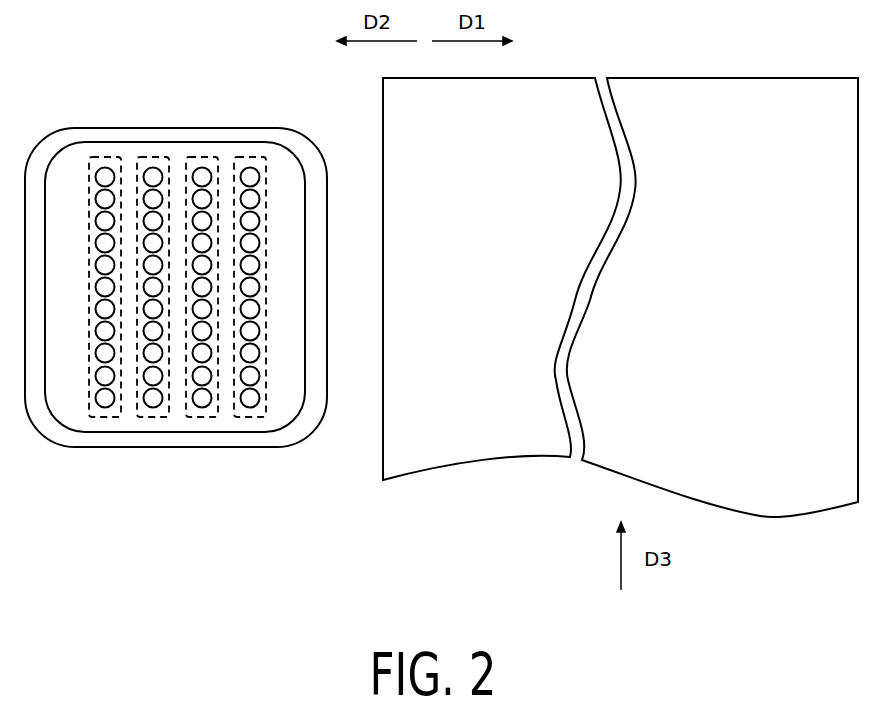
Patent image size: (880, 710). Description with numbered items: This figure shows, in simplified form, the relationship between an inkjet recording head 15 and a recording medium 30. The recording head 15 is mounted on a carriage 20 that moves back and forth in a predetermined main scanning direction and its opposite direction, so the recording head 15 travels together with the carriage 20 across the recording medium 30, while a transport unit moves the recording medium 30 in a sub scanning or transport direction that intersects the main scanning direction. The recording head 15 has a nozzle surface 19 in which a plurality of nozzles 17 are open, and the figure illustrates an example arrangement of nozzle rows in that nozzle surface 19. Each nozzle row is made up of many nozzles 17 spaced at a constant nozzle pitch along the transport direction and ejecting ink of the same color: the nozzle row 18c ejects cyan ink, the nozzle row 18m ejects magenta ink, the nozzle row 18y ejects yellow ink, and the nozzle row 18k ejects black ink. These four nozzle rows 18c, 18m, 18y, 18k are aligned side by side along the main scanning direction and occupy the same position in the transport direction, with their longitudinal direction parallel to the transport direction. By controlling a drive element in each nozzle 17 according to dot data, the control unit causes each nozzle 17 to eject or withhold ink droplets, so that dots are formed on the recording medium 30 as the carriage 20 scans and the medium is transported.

The recording head 15 is at (135, 138).
The nozzle 17 is at (95, 177).
The nozzle row 18c is at (110, 417).
The nozzle row 18m is at (160, 417).
The nozzle row 18y is at (207, 417).
The nozzle row 18k is at (255, 417).
The nozzle surface 19 is at (273, 153).
The carriage 20 is at (198, 128).
The recording medium 30 is at (732, 85).